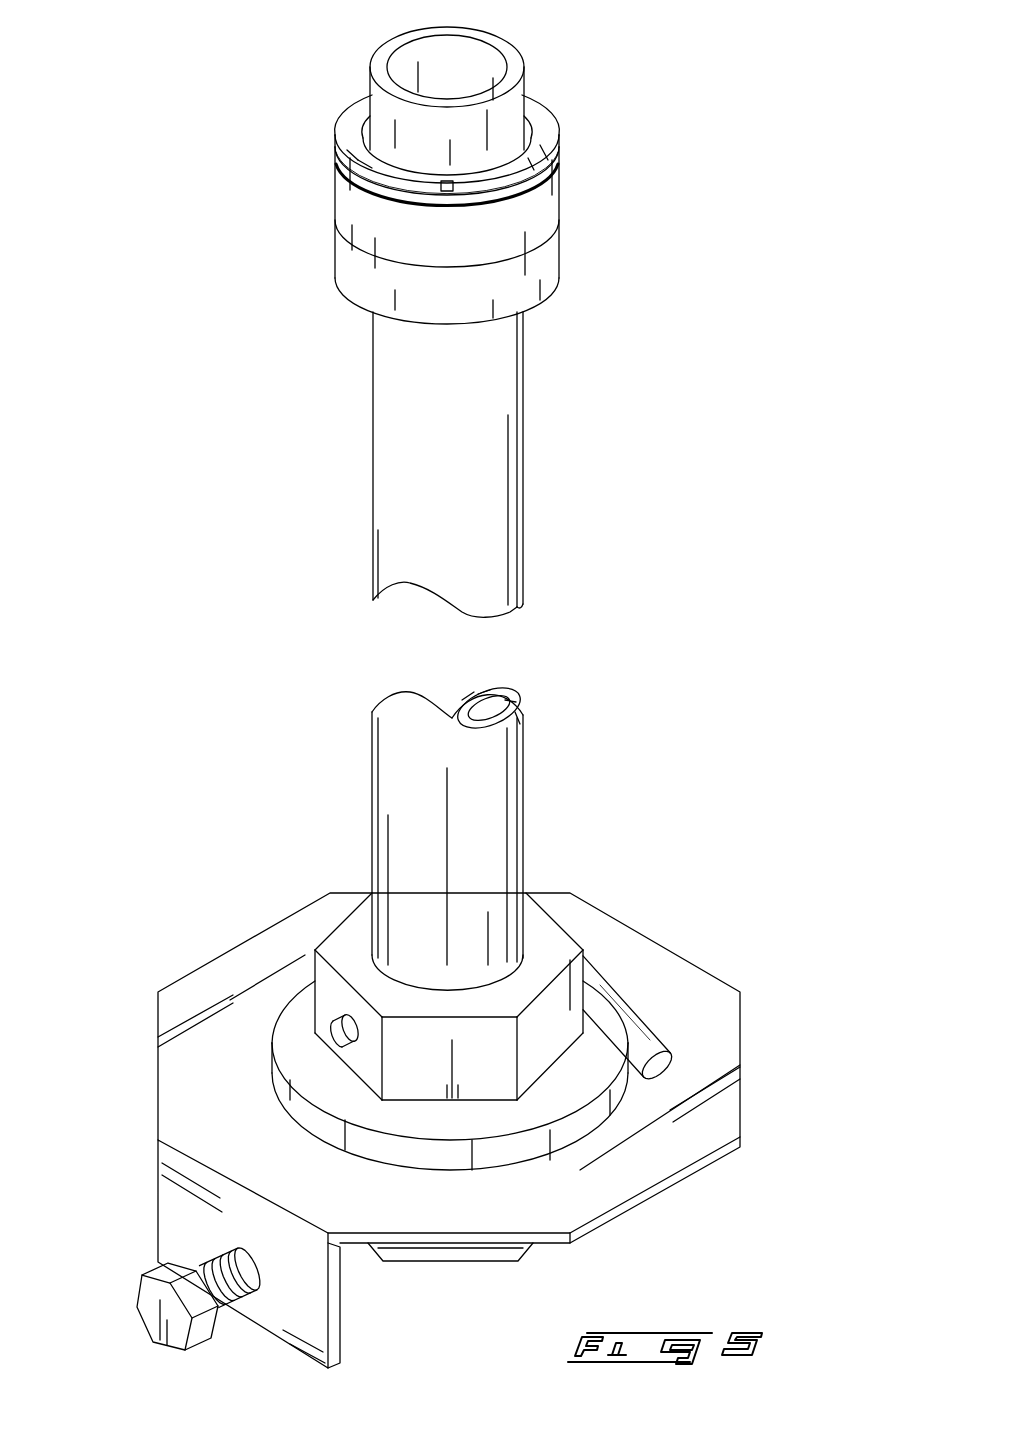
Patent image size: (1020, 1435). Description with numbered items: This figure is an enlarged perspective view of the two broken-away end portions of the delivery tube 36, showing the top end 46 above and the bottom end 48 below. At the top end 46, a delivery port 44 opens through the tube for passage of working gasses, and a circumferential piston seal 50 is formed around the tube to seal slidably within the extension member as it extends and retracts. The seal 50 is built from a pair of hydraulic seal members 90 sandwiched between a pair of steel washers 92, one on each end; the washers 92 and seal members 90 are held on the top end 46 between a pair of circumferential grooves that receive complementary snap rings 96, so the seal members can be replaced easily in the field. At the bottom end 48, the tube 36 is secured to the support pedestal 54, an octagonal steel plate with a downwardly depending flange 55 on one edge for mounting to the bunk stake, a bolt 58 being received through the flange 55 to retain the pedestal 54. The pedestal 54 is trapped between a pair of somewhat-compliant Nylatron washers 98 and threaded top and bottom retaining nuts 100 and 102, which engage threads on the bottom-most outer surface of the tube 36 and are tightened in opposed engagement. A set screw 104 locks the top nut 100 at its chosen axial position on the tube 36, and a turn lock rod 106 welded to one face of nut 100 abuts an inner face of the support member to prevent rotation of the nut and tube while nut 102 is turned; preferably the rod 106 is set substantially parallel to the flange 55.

The delivery tube 36 is at (458, 460).
The delivery port 44 is at (462, 76).
The top end 46 is at (292, 409).
The bottom end 48 is at (443, 1073).
The circumferential piston seal 50 is at (478, 182).
The pedestal 54 is at (667, 1010).
The downwardly depending flange 55 is at (297, 1287).
The bolt 58 is at (136, 1307).
The hydraulic seal members 90 is at (530, 128).
The steel washers 92 is at (355, 120).
The snap rings 96 is at (510, 153).
The washers 98 is at (340, 1090).
The threaded top retaining nut 100 is at (353, 933).
The threaded bottom retaining nut 102 is at (465, 1252).
The set screw 104 is at (323, 1040).
The turn lock rod 106 is at (670, 1068).